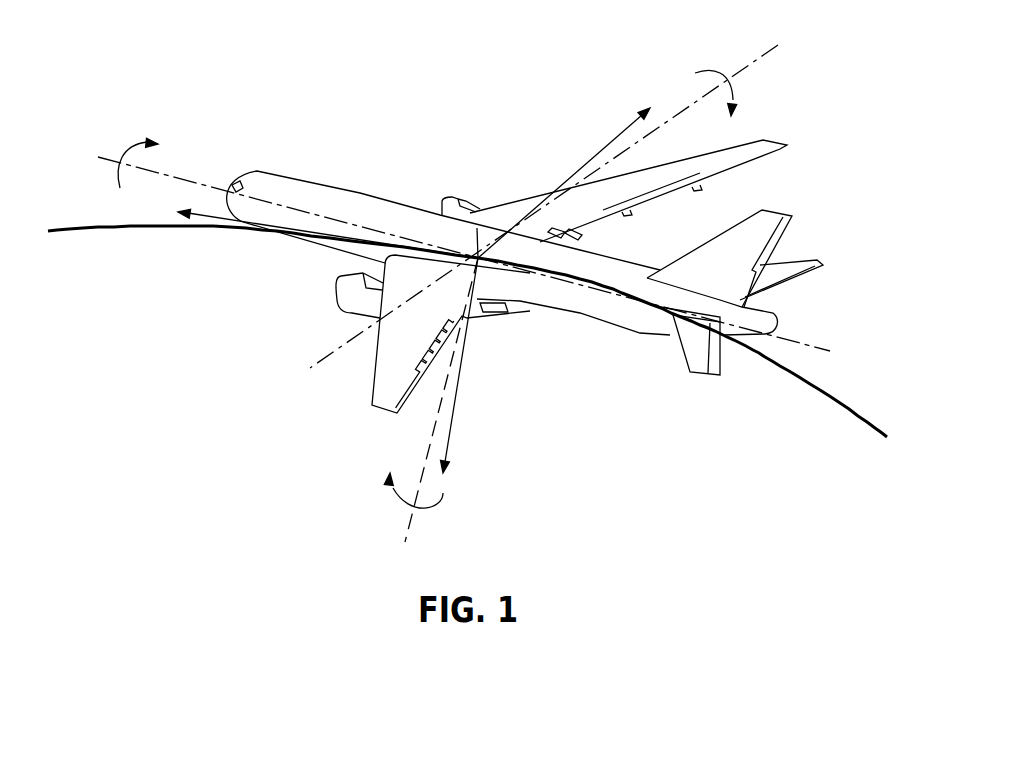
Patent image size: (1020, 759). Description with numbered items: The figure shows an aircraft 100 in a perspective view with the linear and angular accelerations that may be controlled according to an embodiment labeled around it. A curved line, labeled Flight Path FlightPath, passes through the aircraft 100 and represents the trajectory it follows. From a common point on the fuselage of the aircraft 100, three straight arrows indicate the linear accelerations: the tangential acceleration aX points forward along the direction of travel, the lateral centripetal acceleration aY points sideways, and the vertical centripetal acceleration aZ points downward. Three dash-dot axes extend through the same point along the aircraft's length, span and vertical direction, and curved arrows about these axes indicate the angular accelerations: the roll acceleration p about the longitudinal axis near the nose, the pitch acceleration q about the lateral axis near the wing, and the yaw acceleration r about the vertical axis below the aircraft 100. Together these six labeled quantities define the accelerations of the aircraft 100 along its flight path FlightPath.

The aircraft 100 is at (317, 179).
The tangential acceleration aX is at (309, 221).
The lateral centripetal acceleration aY is at (564, 170).
The vertical centripetal acceleration aZ is at (463, 371).
The roll acceleration p is at (131, 147).
The pitch acceleration q is at (716, 73).
The yaw acceleration r is at (404, 497).
The flight path FlightPath is at (467, 331).